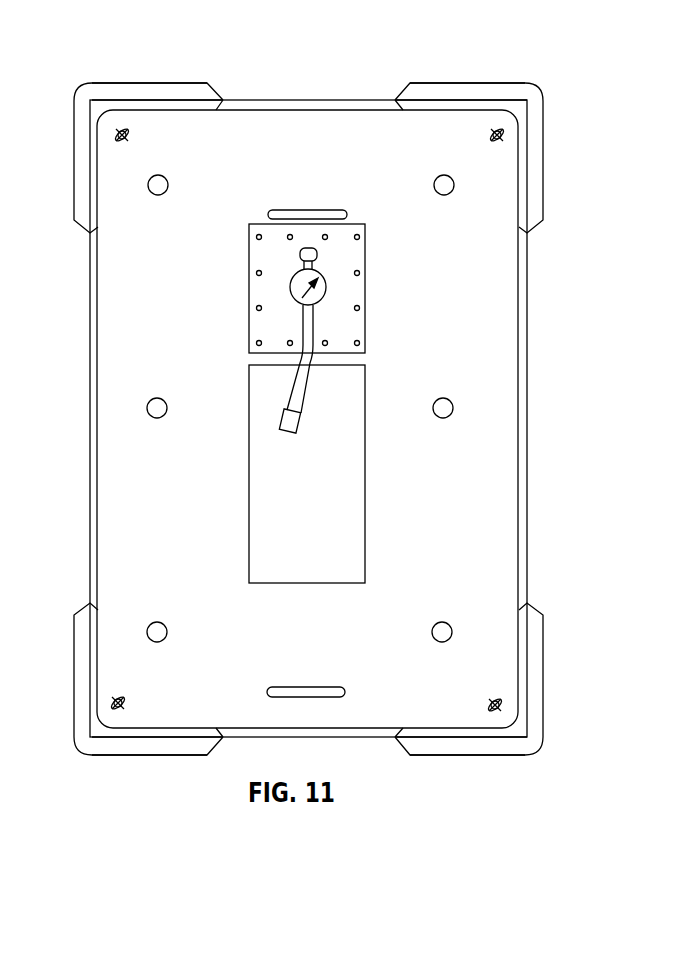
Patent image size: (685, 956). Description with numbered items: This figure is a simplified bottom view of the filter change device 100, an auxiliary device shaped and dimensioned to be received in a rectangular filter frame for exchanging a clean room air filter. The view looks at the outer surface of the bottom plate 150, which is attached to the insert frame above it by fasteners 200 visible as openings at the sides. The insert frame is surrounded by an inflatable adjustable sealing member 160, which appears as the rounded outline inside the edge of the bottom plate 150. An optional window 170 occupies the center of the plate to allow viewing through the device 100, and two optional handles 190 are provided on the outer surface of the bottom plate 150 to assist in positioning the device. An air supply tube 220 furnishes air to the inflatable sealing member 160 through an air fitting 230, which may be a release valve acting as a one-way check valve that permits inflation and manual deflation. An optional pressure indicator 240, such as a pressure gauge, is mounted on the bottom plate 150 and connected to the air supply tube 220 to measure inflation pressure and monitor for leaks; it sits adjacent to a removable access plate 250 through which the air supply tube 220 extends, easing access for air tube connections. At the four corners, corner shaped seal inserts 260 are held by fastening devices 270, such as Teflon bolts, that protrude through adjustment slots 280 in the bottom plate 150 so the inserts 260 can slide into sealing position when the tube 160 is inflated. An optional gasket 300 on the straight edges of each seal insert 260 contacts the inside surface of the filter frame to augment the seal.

The filter change device 100 is at (586, 48).
The bottom plate 150 is at (505, 261).
The adjustable sealing member 160 is at (530, 495).
The window 170 is at (312, 535).
The handles 190 is at (313, 210).
The fasteners 200 is at (150, 193).
The air supply tube 220 is at (300, 255).
The air fitting 230 is at (302, 417).
The pressure indicator 240 is at (323, 287).
The removable access plate 250 is at (277, 318).
The corner shaped seal inserts 260 is at (110, 100).
The fastening devices 270 is at (114, 137).
The adjustment slots 280 is at (117, 130).
The gasket 300 is at (180, 83).